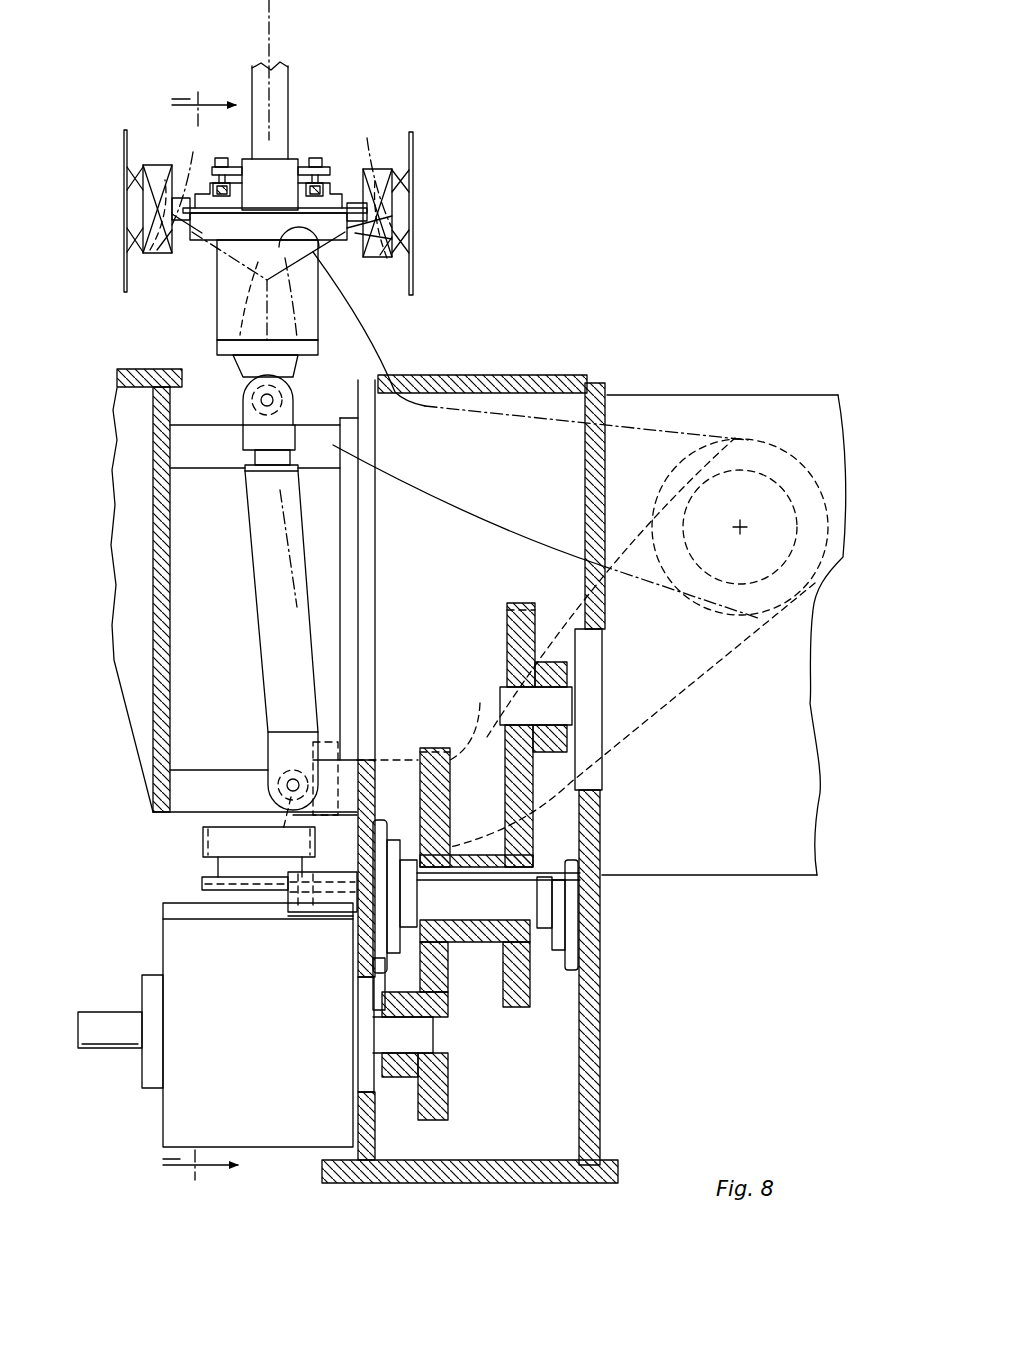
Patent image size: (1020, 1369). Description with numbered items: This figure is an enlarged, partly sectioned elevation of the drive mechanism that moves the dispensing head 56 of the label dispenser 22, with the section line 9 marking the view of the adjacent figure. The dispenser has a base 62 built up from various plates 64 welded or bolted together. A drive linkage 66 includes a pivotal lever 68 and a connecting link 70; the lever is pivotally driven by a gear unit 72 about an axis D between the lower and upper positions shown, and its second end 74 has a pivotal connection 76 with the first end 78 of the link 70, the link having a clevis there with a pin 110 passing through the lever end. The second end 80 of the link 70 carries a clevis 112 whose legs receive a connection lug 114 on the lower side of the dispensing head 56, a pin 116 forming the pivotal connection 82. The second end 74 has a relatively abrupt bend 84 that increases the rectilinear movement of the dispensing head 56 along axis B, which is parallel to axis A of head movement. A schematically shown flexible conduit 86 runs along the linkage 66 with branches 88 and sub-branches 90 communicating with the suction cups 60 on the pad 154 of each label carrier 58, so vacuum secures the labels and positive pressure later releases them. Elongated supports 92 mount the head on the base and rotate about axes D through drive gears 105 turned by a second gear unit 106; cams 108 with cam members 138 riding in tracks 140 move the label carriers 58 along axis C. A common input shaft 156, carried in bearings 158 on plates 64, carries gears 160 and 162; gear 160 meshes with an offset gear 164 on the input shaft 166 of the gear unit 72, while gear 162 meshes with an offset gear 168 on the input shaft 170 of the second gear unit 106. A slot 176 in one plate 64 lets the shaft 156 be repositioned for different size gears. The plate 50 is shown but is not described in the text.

The axis of dispensing head movement A is at (272, 22).
The axis of rectilinear movement B is at (268, 283).
The axis of label carrier movement C is at (742, 540).
The axis D is at (266, 93).
The section line 9 is at (200, 637).
The label dispenser 22 is at (709, 318).
The side plate 50 is at (123, 132).
The dispensing head 56 is at (215, 298).
The label carrier 58 is at (181, 250).
The suction cup 60 is at (130, 177).
The base 62 is at (598, 1028).
The plate 64 is at (157, 432).
The drive linkage 66 is at (266, 779).
The pivotal lever 68 is at (508, 541).
The connecting link 70 is at (256, 640).
The gear unit 72 is at (729, 391).
The second end of lever 74 is at (320, 760).
The pivotal connection 76 is at (290, 768).
The first end of link 78 is at (274, 750).
The second end of link 80 is at (248, 479).
The pivotal connection 82 is at (257, 401).
The abrupt bend 84 is at (392, 362).
The flexible conduit 86 is at (285, 548).
The branch 88 is at (290, 298).
The sub-branch 90 is at (271, 187).
The elongated support 92 is at (292, 75).
The drive gear 105 is at (203, 840).
The second gear unit 106 is at (257, 1150).
The cam 108 is at (231, 157).
The pin 110 is at (258, 858).
The clevis 112 is at (243, 446).
The connection lug 114 is at (296, 377).
The pin 116 is at (275, 400).
The cam member 138 is at (238, 187).
The track 140 is at (180, 238).
The pad 154 is at (152, 165).
The shaft 156 is at (341, 877).
The bearing 158 is at (372, 975).
The gear 160 is at (524, 977).
The gear 162 is at (433, 799).
The offset gear 164 is at (512, 633).
The input shaft 166 is at (503, 687).
The offset gear 168 is at (443, 1000).
The input shaft 170 is at (427, 1040).
The slot 176 is at (353, 920).